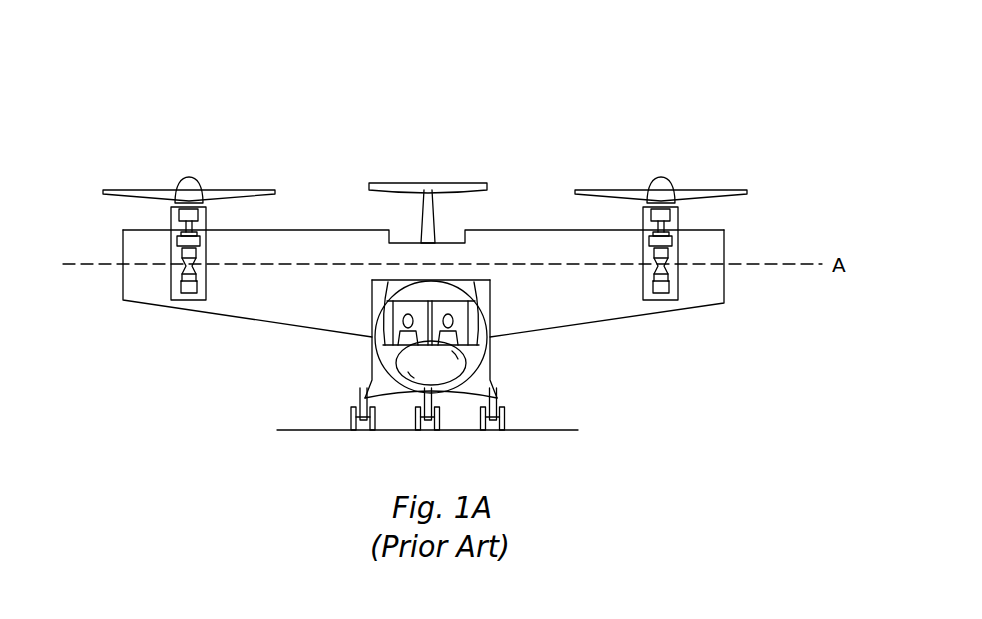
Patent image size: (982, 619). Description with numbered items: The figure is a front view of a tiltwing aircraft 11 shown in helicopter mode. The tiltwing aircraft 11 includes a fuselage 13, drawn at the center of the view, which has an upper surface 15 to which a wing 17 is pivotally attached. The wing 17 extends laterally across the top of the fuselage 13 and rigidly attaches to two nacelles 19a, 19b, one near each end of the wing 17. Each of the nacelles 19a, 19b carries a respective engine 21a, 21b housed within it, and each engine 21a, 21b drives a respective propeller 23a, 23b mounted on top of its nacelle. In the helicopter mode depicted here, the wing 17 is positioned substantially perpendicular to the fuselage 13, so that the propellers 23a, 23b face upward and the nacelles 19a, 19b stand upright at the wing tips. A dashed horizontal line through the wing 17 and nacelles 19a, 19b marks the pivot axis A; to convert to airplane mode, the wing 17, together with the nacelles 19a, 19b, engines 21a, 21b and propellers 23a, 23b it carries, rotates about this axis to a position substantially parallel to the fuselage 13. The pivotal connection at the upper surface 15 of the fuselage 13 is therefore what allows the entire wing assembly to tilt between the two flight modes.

The tiltwing aircraft 11 is at (547, 120).
The fuselage 13 is at (488, 340).
The upper surface 15 is at (425, 281).
The wing 17 is at (508, 230).
The nacelle 19a is at (171, 214).
The nacelle 19b is at (679, 213).
The engine 21a is at (186, 293).
The engine 21b is at (661, 300).
The propeller 23a is at (140, 190).
The propeller 23b is at (718, 190).